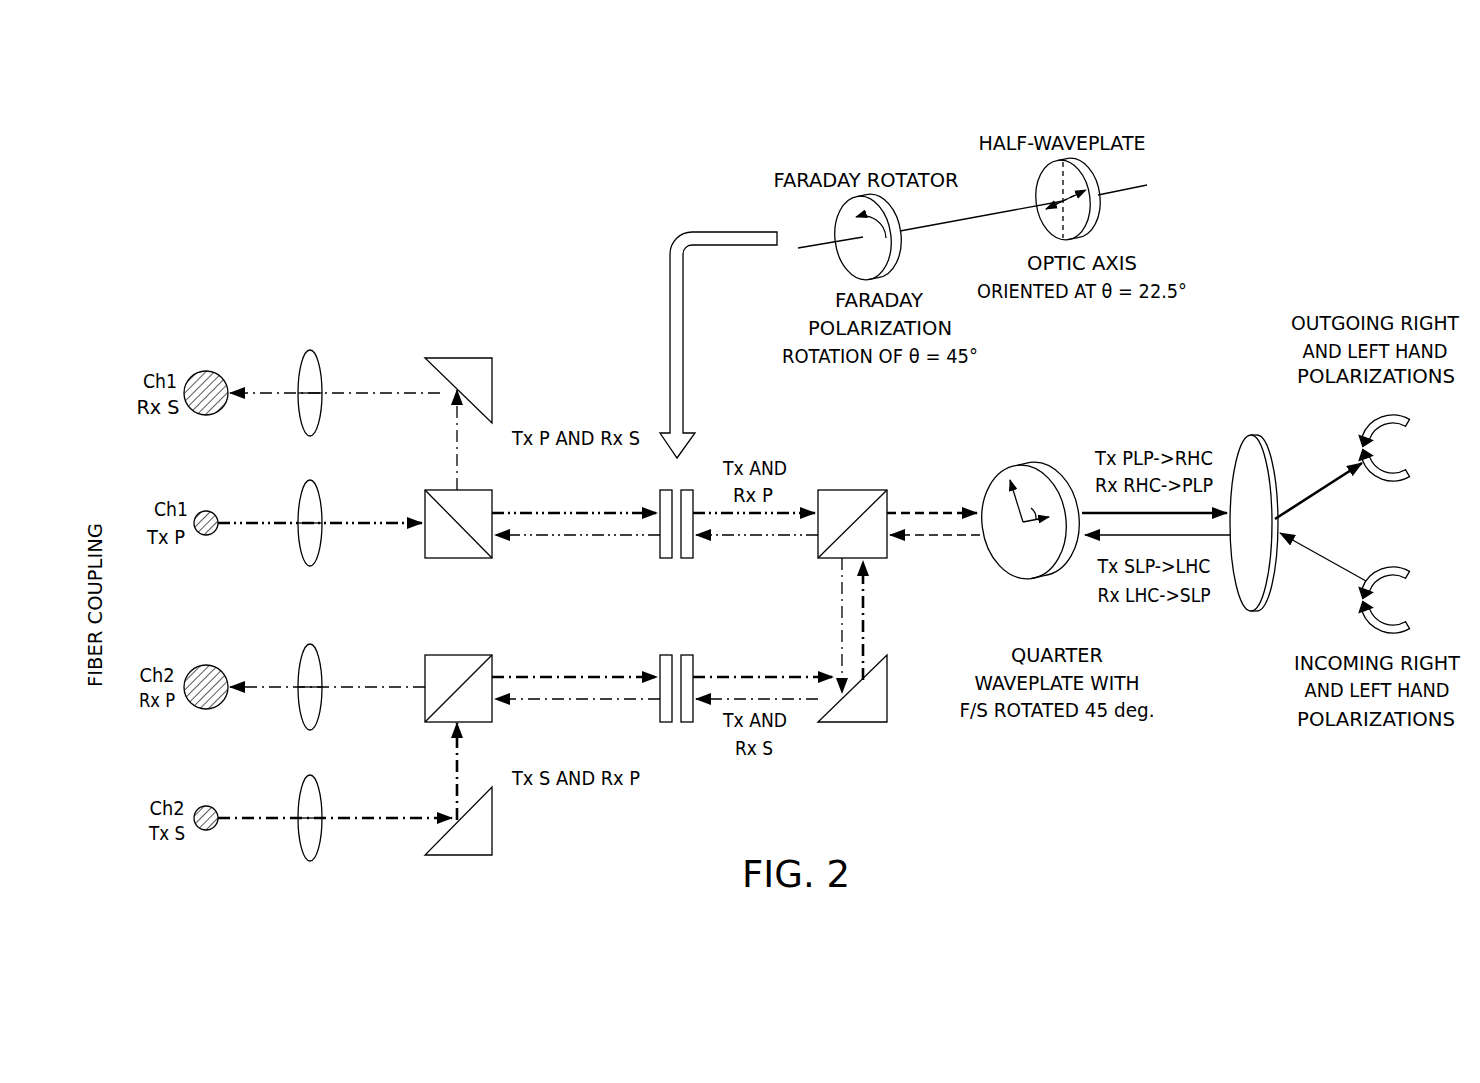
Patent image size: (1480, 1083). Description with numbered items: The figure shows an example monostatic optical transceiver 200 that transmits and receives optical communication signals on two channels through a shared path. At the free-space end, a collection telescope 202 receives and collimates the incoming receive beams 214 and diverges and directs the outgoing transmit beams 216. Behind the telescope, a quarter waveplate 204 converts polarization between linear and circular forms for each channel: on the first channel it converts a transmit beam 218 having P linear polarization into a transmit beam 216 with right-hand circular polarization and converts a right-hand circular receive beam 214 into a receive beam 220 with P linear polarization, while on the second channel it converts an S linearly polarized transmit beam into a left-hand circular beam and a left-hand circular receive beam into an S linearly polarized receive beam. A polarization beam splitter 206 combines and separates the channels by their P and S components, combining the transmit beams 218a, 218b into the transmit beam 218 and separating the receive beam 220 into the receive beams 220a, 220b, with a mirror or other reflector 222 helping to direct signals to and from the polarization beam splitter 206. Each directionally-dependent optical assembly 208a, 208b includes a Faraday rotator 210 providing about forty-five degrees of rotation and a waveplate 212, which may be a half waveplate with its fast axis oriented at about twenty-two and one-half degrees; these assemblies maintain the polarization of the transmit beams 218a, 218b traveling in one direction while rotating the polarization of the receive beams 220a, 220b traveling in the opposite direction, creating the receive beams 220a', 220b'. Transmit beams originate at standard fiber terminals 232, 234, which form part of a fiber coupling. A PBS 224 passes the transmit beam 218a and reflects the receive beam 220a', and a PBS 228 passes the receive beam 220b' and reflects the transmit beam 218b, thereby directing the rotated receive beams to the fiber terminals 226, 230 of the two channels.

The monostatic optical transceiver 200 is at (1322, 116).
The collection telescope 202 is at (1251, 435).
The quarter waveplate 204 is at (1043, 580).
The polarization beam splitter 206 is at (855, 490).
The directionally-dependent optical assembly 208a is at (681, 568).
The directionally-dependent optical assembly 208b is at (681, 733).
The Faraday rotator 210 is at (832, 228).
The waveplate 212 is at (1100, 205).
The receive beam 214 is at (1330, 563).
The transmit beam 216 is at (1330, 485).
The transmit beam 218 is at (930, 512).
The transmit beam 218a is at (545, 511).
The transmit beam 218b is at (532, 675).
The receive beam 220 is at (942, 538).
The receive beam 220a is at (757, 564).
The receive beam 220a' is at (577, 564).
The receive beam 220b is at (769, 628).
The receive beam 220b' is at (577, 728).
The mirror or other reflector 222 is at (852, 722).
The PBS 224 is at (425, 504).
The fiber terminal 226 is at (207, 370).
The PBS 228 is at (425, 703).
The fiber terminal 230 is at (206, 710).
The fiber terminal 232 is at (203, 510).
The fiber terminal 234 is at (208, 831).